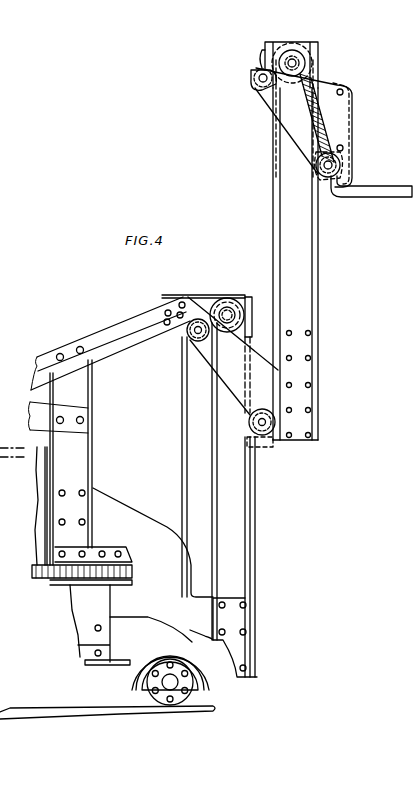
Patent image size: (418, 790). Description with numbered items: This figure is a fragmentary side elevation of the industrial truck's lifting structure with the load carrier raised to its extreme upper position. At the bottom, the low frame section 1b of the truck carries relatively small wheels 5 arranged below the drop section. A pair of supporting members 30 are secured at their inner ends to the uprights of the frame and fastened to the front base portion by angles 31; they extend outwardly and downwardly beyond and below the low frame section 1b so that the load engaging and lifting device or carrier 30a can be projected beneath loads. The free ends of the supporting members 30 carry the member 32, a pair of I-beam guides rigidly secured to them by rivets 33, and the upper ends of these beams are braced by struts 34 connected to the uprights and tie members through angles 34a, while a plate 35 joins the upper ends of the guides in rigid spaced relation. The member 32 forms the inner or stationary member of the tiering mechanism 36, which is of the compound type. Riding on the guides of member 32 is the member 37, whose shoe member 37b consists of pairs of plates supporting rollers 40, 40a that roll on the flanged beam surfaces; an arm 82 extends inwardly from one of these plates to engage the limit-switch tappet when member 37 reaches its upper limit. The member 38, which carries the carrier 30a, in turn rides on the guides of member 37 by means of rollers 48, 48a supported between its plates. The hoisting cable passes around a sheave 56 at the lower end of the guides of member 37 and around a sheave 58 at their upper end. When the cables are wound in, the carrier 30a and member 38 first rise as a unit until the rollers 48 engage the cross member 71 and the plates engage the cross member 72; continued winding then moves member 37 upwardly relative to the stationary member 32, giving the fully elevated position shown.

The cross member 71 is at (268, 47).
The sheave 58 is at (293, 56).
The roller 48 is at (262, 66).
The cross member 72 is at (322, 70).
The member 38 is at (291, 111).
The roller 48a is at (335, 187).
The load engaging and lifting device or carrier 30a is at (206, 447).
The member 37 is at (312, 278).
The angle 34a is at (185, 295).
The plate 35 is at (254, 312).
The strut 34 is at (118, 332).
The arm 82 is at (187, 338).
The roller 40 is at (198, 345).
The shoe member 37b is at (234, 375).
The sheave 56 is at (262, 408).
The roller 40a is at (258, 440).
The tiering mechanism 36 is at (234, 481).
The supporting member 30 is at (142, 523).
The member 32 is at (240, 557).
The angle 31 is at (108, 555).
The rivet 33 is at (246, 606).
The low frame section 1b is at (122, 655).
The wheel 5 is at (135, 688).